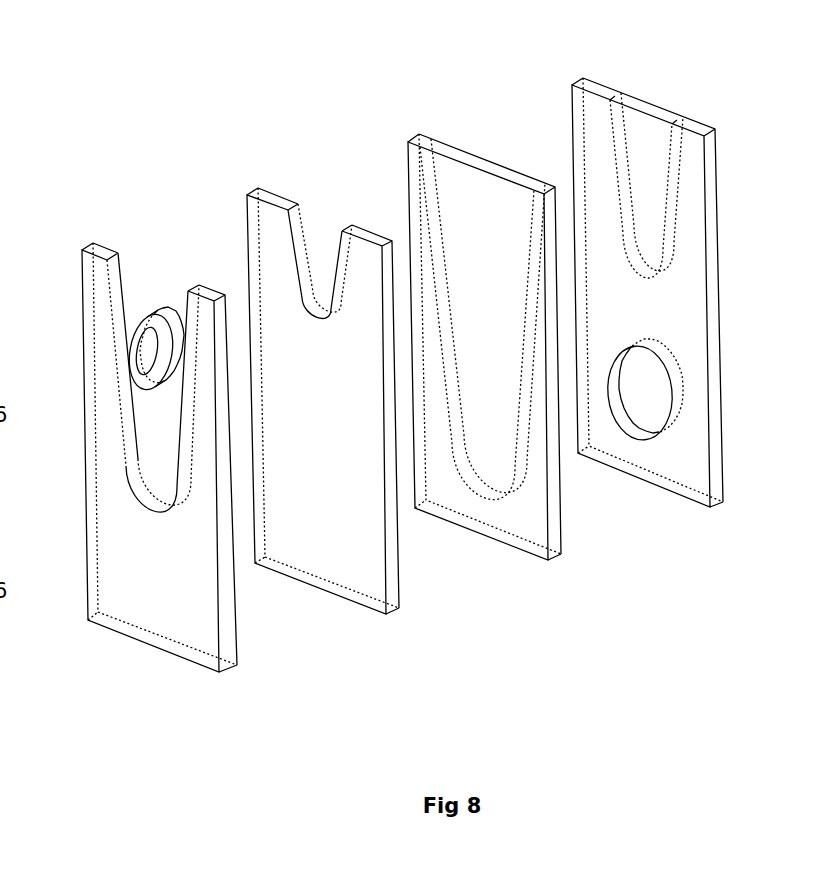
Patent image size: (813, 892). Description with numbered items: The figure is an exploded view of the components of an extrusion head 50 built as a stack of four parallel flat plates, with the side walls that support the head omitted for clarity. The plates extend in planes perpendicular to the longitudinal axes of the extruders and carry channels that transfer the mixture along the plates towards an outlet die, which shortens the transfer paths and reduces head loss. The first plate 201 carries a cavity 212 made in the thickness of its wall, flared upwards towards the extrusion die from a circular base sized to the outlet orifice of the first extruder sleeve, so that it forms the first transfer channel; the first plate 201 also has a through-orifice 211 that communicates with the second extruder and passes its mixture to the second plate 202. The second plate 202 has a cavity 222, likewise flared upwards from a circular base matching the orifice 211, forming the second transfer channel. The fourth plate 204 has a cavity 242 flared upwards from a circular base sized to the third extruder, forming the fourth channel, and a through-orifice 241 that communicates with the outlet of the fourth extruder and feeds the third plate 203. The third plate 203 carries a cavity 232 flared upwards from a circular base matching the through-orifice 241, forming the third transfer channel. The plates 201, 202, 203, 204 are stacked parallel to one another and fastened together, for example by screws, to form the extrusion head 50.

The extrusion head 50 is at (342, 136).
The first plate 201 is at (178, 640).
The through-orifice 211 is at (143, 362).
The cavity 212 is at (138, 300).
The second plate 202 is at (353, 597).
The cavity 222 is at (310, 273).
The third plate 203 is at (485, 520).
The cavity 232 is at (462, 190).
The fourth plate 204 is at (648, 477).
The through-orifice 241 is at (660, 398).
The cavity 242 is at (633, 147).